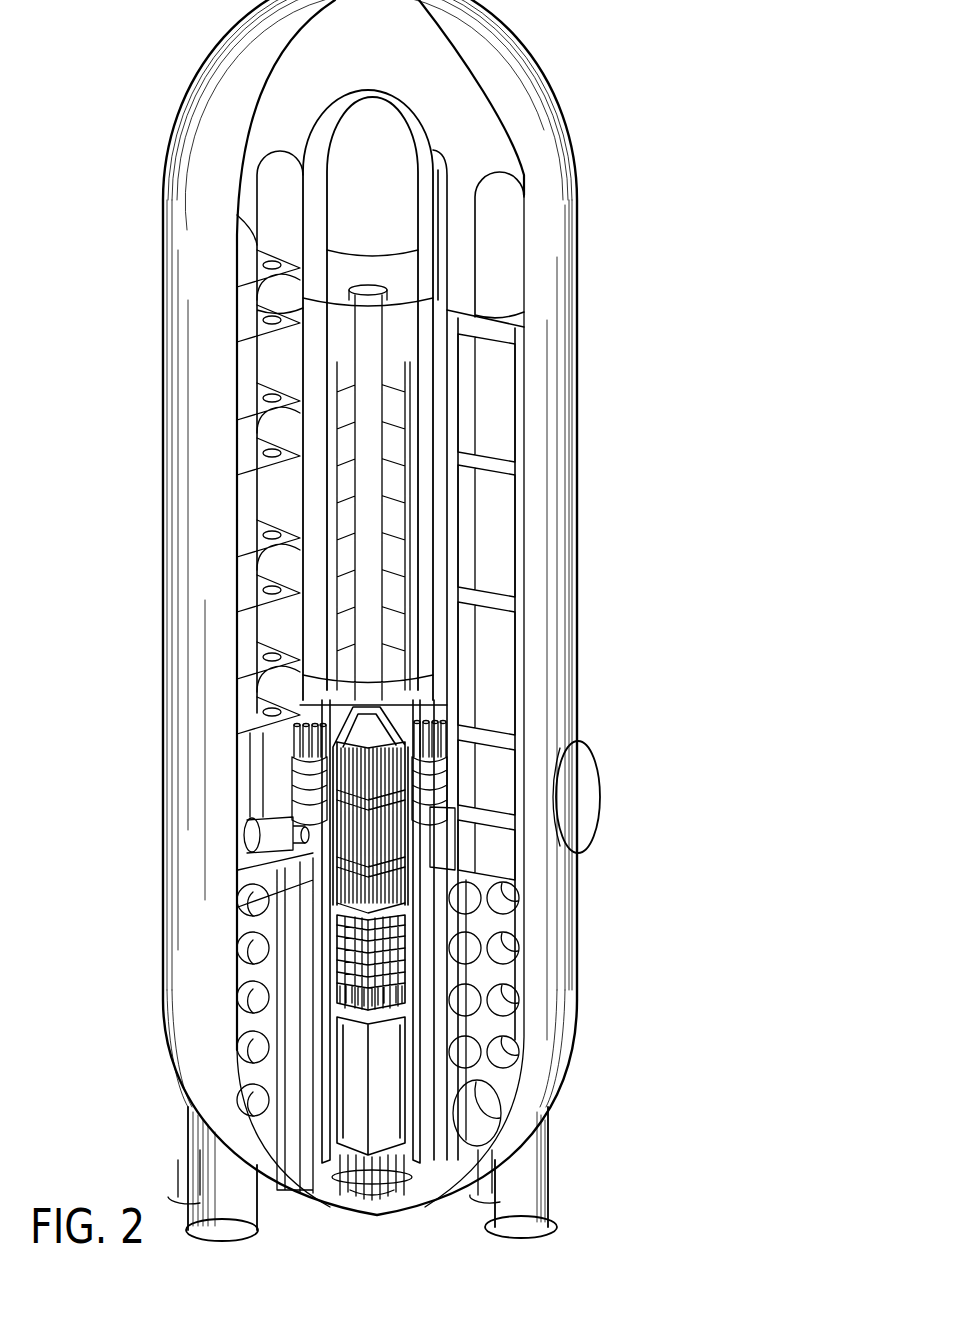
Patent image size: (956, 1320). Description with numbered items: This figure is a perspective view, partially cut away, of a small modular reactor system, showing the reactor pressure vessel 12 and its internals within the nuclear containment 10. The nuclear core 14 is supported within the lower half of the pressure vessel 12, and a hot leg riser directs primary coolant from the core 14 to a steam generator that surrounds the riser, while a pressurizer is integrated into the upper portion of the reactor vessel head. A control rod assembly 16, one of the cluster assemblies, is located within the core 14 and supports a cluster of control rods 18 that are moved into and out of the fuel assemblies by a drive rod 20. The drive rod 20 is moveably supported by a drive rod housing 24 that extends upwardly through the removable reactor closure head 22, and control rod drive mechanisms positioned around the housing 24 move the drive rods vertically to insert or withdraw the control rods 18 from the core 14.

The nuclear containment 10 is at (548, 116).
The reactor closure head 22 is at (575, 570).
The drive rod housing 24 is at (443, 757).
The drive rod 20 is at (495, 893).
The reactor pressure vessel 12 is at (415, 945).
The control rod assembly 16 is at (405, 1000).
The control rods 18 is at (455, 1032).
The nuclear core 14 is at (387, 1082).